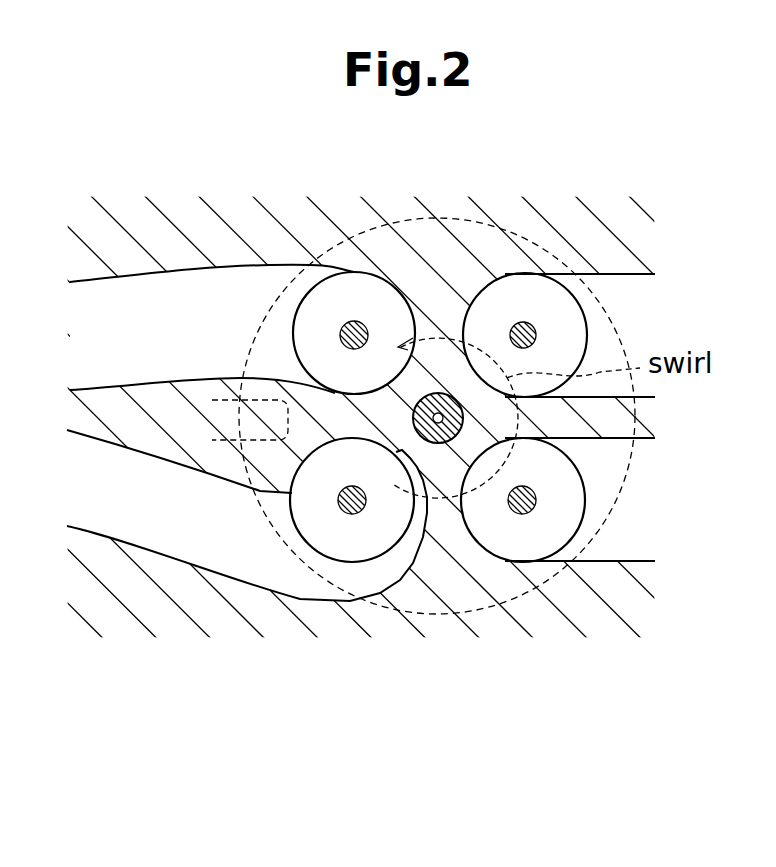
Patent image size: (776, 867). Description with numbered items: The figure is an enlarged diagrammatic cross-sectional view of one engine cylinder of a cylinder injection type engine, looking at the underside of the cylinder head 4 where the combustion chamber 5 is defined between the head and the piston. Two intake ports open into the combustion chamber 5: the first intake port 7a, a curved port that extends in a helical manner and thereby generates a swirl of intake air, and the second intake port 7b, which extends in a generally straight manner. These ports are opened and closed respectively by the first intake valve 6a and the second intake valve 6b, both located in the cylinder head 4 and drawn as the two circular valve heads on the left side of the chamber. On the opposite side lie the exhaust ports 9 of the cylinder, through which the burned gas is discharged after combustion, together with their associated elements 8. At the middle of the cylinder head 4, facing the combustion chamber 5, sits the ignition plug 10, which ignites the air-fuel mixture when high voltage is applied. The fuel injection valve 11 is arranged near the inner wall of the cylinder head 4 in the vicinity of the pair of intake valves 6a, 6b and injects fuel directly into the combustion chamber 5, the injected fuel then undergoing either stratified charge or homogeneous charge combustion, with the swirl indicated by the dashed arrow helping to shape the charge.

The cylinder head 4 is at (618, 214).
The combustion chamber 5 is at (440, 216).
The first intake valve 6a is at (363, 543).
The second intake valve 6b is at (373, 287).
The first intake port 7a is at (212, 560).
The second intake port 7b is at (195, 287).
The exhaust port 8 is at (515, 285).
The exhaust port 9 is at (623, 283).
The ignition plug 10 is at (450, 394).
The fuel injection valve 11 is at (212, 440).